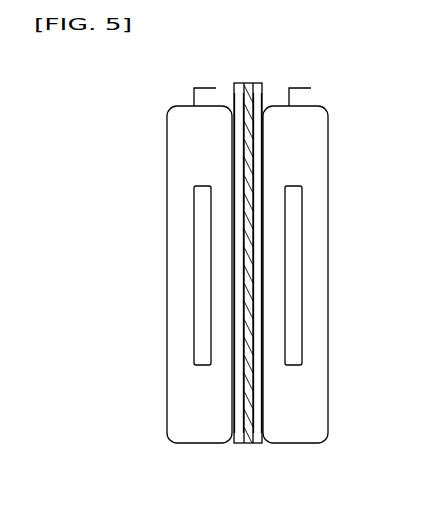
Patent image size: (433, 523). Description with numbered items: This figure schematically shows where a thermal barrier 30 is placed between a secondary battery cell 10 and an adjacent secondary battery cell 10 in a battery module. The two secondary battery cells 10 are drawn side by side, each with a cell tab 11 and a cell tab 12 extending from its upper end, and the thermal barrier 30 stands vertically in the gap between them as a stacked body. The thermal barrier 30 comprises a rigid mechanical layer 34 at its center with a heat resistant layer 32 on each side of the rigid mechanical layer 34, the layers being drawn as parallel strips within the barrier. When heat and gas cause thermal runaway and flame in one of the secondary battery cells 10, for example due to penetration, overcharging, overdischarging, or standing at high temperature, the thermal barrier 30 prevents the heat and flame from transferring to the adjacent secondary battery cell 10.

The secondary battery cell 10 is at (321, 333).
The cell tab 11 is at (290, 270).
The cell tab 12 is at (311, 82).
The thermal barrier 30 is at (237, 440).
The heat resistant layer 32 is at (254, 389).
The rigid mechanical layer 34 is at (237, 407).